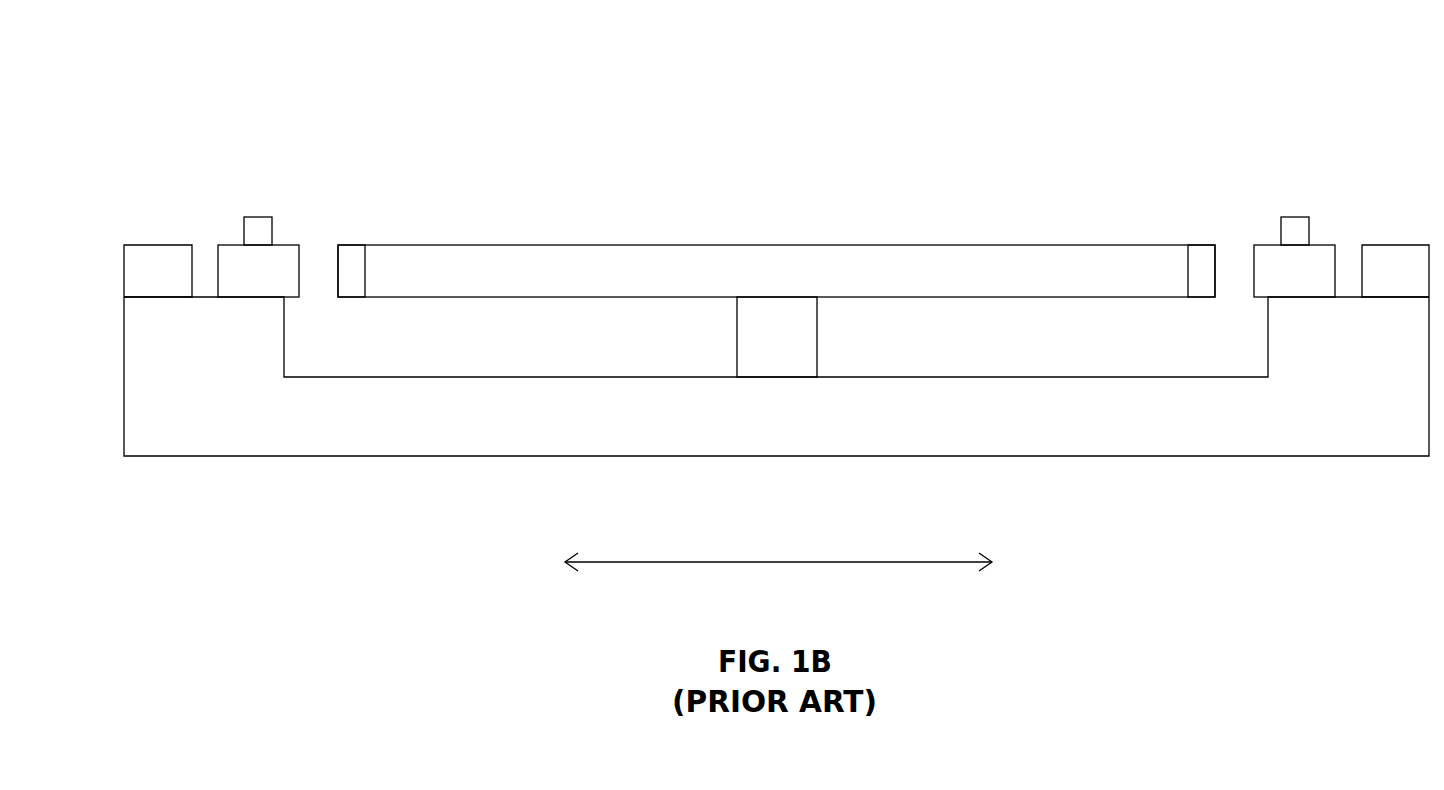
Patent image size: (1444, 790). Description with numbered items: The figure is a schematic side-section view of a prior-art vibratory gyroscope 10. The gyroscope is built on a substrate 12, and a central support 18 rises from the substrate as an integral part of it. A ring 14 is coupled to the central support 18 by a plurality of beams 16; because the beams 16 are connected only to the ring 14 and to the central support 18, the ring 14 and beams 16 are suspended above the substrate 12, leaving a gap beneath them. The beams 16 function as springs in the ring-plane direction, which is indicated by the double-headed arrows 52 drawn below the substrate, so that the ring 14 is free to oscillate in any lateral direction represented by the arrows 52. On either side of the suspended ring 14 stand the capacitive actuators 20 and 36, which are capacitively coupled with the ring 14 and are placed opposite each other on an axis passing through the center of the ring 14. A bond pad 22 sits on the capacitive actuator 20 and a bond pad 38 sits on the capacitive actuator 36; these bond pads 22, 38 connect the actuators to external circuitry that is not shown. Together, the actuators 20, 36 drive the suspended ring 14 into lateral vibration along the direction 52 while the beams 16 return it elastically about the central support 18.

The vibratory gyroscope 10 is at (972, 98).
The substrate 12 is at (792, 457).
The ring 14 is at (356, 256).
The beams 16 is at (959, 245).
The central support 18 is at (817, 336).
The capacitive actuator 20 is at (1327, 244).
The bond pad 22 is at (1297, 217).
The capacitive actuator 36 is at (226, 244).
The bond pad 38 is at (258, 217).
The arrows 52 is at (918, 563).